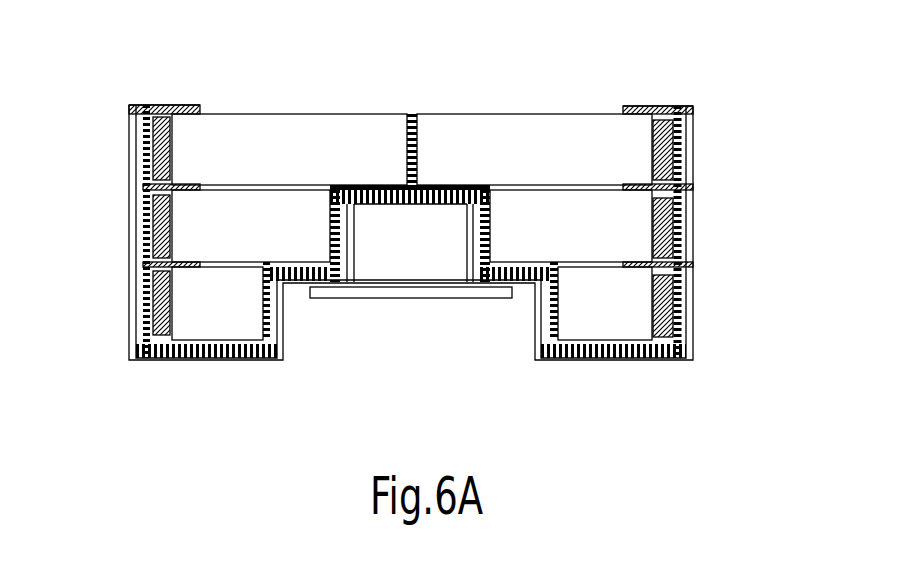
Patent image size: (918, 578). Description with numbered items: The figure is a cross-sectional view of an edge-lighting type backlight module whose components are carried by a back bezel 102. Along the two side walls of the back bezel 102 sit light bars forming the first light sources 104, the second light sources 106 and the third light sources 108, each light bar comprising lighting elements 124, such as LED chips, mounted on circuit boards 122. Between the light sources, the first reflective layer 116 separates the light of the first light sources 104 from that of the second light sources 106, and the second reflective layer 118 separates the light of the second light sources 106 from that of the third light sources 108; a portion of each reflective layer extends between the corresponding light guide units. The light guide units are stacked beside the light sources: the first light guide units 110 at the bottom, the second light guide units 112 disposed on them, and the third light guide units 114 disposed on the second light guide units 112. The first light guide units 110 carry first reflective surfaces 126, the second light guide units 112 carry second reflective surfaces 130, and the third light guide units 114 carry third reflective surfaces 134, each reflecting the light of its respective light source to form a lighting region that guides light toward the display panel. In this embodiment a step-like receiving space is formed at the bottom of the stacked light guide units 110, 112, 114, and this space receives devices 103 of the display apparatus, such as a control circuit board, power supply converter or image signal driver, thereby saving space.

The back bezel 102 is at (182, 350).
The devices 103 is at (427, 299).
The first light sources 104 is at (670, 301).
The second light sources 106 is at (676, 222).
The third light sources 108 is at (668, 140).
The first light guide units 110 is at (241, 315).
The second light guide units 112 is at (303, 241).
The third light guide units 114 is at (318, 163).
The first reflective layer 116 is at (672, 264).
The second reflective layer 118 is at (680, 185).
The circuit boards 122 is at (145, 172).
The lighting elements 124 is at (145, 144).
The first reflective surfaces 126 is at (580, 340).
The second reflective surfaces 130 is at (520, 265).
The third reflective surfaces 134 is at (446, 186).